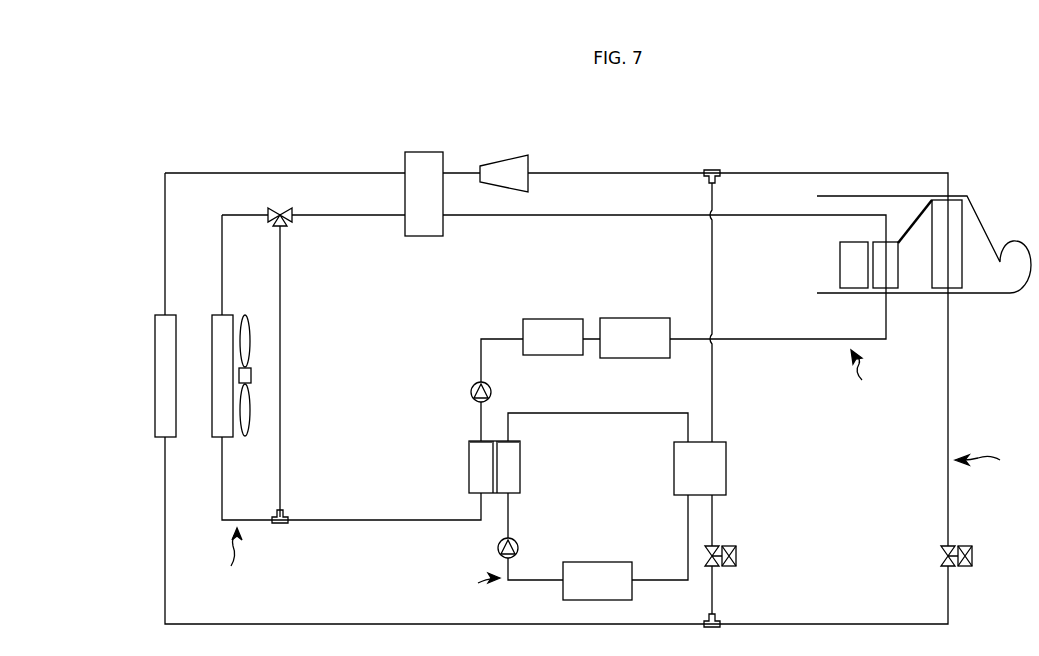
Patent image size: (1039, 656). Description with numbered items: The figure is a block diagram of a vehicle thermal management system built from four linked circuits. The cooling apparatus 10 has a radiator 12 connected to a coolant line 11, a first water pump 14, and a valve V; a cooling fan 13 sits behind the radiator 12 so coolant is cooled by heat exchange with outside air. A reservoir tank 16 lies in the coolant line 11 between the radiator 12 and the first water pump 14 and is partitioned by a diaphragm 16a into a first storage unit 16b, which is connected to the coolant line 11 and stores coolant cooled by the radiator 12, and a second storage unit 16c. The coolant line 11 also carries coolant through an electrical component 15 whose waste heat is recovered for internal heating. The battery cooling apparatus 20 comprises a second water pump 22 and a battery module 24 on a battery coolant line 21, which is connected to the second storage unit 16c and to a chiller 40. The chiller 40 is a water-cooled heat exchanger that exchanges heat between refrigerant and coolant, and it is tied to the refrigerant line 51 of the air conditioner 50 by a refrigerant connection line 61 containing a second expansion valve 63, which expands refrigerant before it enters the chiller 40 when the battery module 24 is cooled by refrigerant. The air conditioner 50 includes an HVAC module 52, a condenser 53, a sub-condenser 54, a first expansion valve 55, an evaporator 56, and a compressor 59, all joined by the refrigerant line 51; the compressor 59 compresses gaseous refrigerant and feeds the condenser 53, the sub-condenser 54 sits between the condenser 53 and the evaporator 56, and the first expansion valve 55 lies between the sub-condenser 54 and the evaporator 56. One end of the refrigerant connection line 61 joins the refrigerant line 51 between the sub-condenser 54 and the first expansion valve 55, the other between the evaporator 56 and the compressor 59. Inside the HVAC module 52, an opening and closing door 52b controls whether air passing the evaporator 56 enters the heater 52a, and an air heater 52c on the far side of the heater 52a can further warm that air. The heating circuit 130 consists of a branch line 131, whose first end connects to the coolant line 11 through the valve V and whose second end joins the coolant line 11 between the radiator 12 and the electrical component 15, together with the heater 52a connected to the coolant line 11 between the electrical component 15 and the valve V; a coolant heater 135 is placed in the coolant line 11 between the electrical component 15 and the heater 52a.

The cooling apparatus 10 is at (231, 558).
The coolant line 11 is at (244, 215).
The radiator 12 is at (211, 376).
The cooling fan 13 is at (247, 437).
The branch line 131 is at (280, 371).
The valve V is at (285, 218).
The first water pump 14 is at (471, 391).
The electrical component 15 is at (551, 319).
The coolant heater 135 is at (633, 318).
The reservoir tank 16 is at (494, 477).
The diaphragm 16a is at (495, 493).
The first storage unit 16b is at (469, 443).
The second storage unit 16c is at (520, 466).
The battery cooling apparatus 20 is at (469, 583).
The battery coolant line 21 is at (596, 413).
The second water pump 22 is at (498, 548).
The battery module 24 is at (597, 562).
The chiller 40 is at (726, 466).
The air conditioner 50 is at (989, 461).
The refrigerant line 51 is at (283, 173).
The HVAC module 52 is at (915, 239).
The heater 52a is at (899, 288).
The opening and closing door 52b is at (919, 197).
The air heater 52c is at (840, 266).
The condenser 53 is at (421, 152).
The sub-condenser 54 is at (155, 376).
The first expansion valve 55 is at (972, 556).
The evaporator 56 is at (962, 286).
The compressor 59 is at (505, 156).
The refrigerant connection line 61 is at (712, 274).
The second expansion valve 63 is at (736, 556).
The heating circuit 130 is at (862, 377).